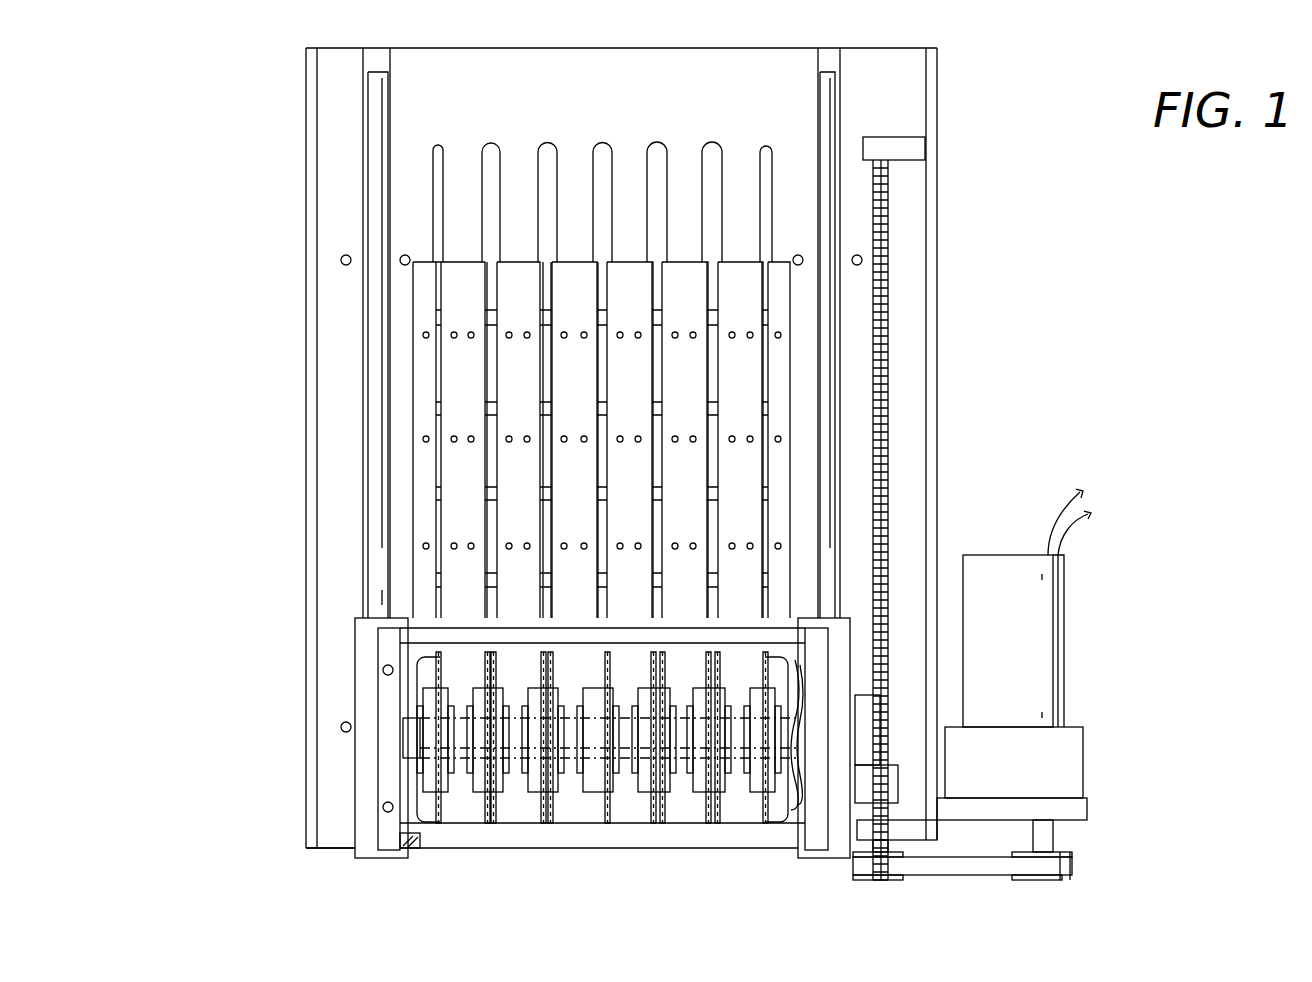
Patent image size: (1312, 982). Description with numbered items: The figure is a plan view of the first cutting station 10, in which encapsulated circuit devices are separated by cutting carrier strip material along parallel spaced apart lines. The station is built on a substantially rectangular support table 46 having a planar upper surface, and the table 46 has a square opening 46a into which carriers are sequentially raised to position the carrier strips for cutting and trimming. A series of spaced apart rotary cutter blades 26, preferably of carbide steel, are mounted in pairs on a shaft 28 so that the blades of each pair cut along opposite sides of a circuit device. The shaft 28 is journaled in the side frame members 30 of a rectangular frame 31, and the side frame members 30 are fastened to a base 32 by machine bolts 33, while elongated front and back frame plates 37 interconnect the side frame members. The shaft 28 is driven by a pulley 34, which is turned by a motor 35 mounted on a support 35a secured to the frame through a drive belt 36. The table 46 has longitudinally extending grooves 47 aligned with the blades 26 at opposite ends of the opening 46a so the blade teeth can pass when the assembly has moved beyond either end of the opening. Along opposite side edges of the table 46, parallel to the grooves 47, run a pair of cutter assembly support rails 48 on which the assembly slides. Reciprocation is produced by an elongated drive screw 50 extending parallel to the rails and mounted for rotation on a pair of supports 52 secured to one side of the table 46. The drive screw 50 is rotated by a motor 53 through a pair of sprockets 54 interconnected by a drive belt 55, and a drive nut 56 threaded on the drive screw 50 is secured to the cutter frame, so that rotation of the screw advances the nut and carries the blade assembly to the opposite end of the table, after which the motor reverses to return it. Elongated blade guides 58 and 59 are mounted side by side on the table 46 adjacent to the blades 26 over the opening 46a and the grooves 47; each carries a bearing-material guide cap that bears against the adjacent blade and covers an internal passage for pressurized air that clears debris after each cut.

The first cutting station 10 is at (955, 302).
The rotary cutter blades 26 is at (600, 803).
The shaft 28 is at (675, 752).
The side frame members 30 is at (388, 697).
The rectangular frame 31 is at (392, 850).
The base 32 is at (410, 818).
The machine bolts 33 is at (383, 670).
The pulley 34 is at (868, 738).
The motor 35 is at (797, 682).
The support 35a is at (840, 660).
The drive belt 36 is at (867, 712).
The front and back frame plates 37 is at (460, 628).
The support table 46 is at (630, 88).
The square opening 46a is at (412, 366).
The grooves 47 is at (770, 147).
The cutter assembly support rails 48 is at (388, 95).
The drive screw 50 is at (883, 407).
The supports 52 is at (912, 150).
The motor 53 is at (1043, 613).
The sprockets 54 is at (860, 887).
The drive belt 55 is at (995, 838).
The drive nut 56 is at (887, 780).
The blade guide 58 is at (462, 270).
The blade guide 59 is at (425, 286).